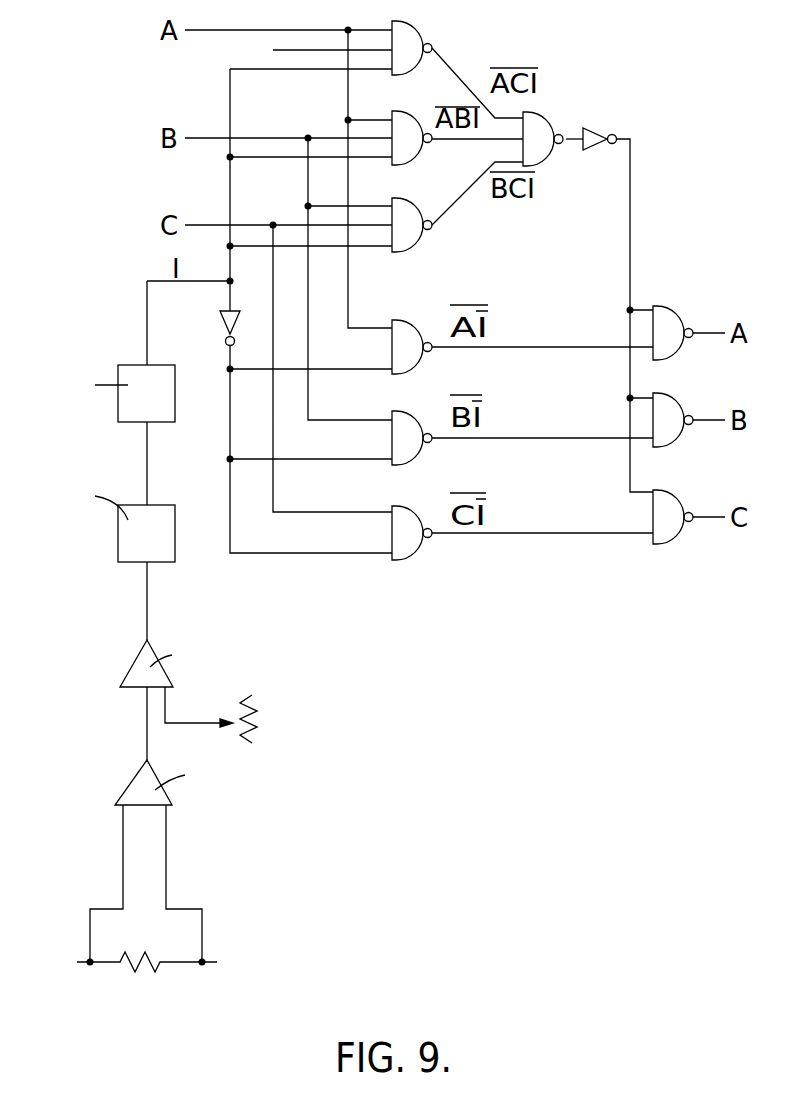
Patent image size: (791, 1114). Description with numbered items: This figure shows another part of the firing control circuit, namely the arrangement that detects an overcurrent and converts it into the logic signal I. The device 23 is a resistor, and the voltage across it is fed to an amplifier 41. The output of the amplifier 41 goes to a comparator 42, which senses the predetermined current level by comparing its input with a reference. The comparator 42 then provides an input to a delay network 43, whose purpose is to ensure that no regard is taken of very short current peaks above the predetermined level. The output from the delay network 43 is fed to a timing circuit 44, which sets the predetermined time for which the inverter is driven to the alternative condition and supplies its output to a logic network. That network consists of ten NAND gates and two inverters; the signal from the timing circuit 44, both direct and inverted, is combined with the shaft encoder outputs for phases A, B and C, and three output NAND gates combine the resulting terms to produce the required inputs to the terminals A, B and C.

The timing circuit 44 is at (110, 407).
The delay network 43 is at (110, 541).
The comparator 42 is at (120, 678).
The amplifier 41 is at (118, 790).
The resistor 23 is at (155, 970).